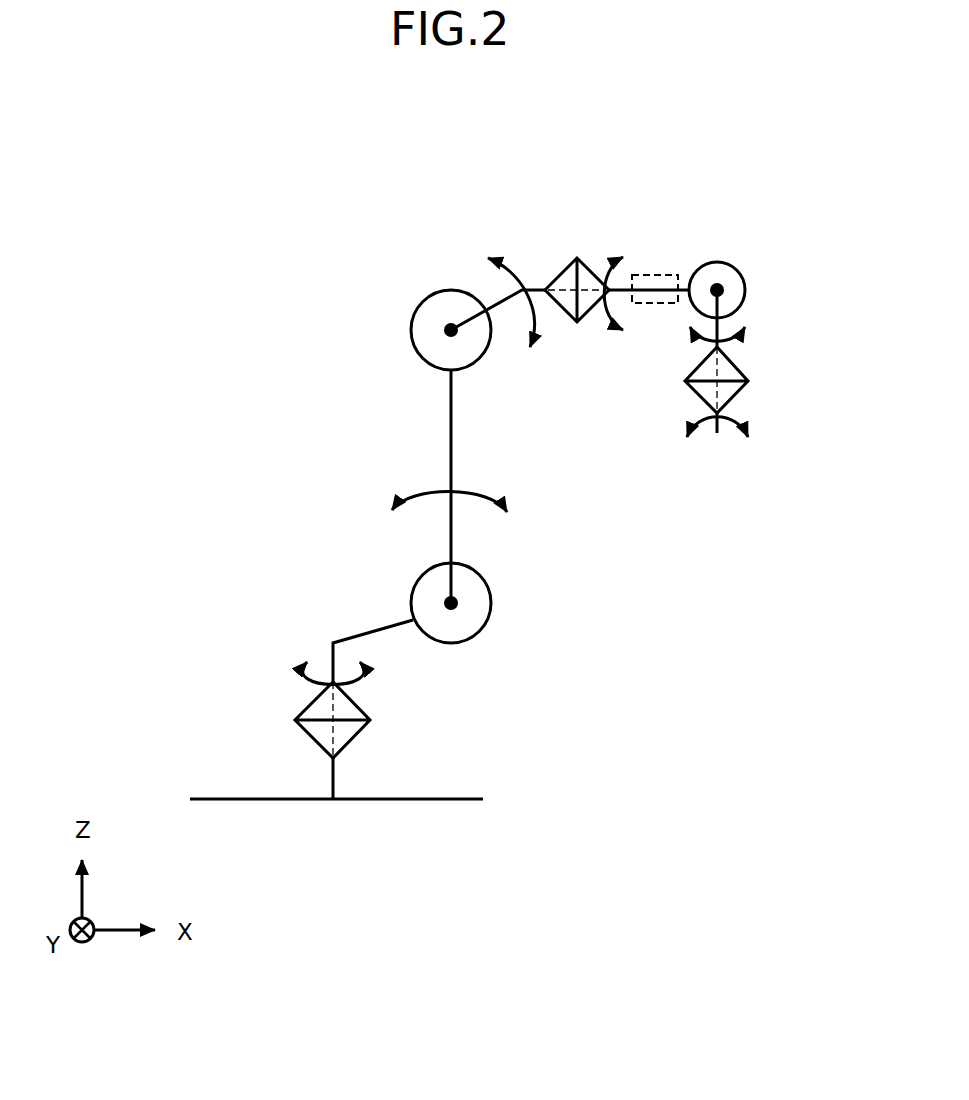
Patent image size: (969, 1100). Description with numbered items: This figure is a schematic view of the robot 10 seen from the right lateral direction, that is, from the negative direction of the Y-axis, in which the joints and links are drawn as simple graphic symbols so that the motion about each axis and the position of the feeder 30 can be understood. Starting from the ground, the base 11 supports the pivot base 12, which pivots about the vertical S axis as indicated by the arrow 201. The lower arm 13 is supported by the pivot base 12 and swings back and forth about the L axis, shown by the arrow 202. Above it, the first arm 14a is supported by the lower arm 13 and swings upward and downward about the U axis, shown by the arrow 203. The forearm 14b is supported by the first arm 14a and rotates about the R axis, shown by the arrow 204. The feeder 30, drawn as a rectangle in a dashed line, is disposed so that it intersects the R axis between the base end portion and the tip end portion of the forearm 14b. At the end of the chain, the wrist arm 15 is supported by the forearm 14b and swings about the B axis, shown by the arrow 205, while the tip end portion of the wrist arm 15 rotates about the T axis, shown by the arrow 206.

The robot 10 is at (350, 178).
The base 11 is at (333, 773).
The pivot base 12 is at (398, 623).
The lower arm 13 is at (452, 451).
The first arm 14a is at (502, 306).
The forearm 14b is at (625, 308).
The wrist arm 15 is at (722, 347).
The feeder 30 is at (658, 268).
The arrow 201 is at (293, 680).
The arrow 202 is at (425, 493).
The arrow 203 is at (525, 278).
The arrow 204 is at (620, 265).
The arrow 205 is at (732, 338).
The arrow 206 is at (753, 426).
The S axis S is at (330, 716).
The L axis L is at (457, 605).
The U axis U is at (449, 328).
The R axis R is at (576, 288).
The B axis B is at (724, 290).
The T axis T is at (719, 383).